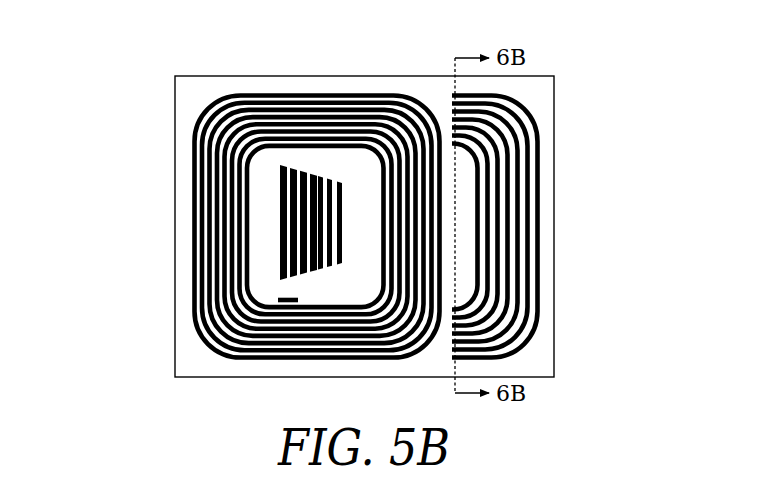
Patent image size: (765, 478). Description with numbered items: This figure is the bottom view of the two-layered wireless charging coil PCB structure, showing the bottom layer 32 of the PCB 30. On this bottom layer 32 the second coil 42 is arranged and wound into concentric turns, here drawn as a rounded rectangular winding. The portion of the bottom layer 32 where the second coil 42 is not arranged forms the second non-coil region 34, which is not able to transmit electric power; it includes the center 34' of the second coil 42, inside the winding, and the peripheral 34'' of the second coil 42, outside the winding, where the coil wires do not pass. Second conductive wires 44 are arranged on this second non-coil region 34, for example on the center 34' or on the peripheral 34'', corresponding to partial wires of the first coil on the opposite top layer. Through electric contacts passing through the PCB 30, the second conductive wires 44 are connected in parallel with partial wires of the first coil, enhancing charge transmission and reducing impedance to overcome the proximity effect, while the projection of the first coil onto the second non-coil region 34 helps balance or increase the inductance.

The PCB 30 is at (175, 241).
The bottom layer 32 is at (535, 90).
The second non-coil region 34 is at (523, 179).
The center of the second coil 34' is at (497, 223).
The peripheral of the second coil 34'' is at (565, 178).
The second coil 42 is at (284, 96).
The second conductive wires 44 is at (280, 202).